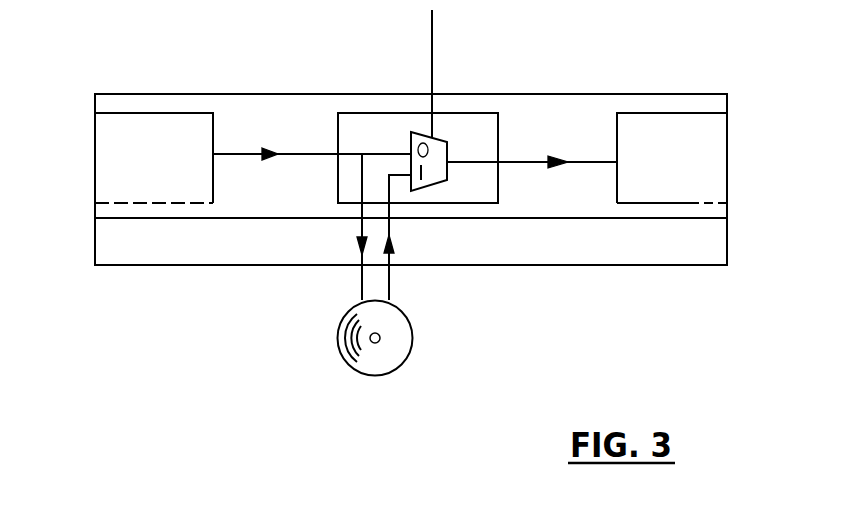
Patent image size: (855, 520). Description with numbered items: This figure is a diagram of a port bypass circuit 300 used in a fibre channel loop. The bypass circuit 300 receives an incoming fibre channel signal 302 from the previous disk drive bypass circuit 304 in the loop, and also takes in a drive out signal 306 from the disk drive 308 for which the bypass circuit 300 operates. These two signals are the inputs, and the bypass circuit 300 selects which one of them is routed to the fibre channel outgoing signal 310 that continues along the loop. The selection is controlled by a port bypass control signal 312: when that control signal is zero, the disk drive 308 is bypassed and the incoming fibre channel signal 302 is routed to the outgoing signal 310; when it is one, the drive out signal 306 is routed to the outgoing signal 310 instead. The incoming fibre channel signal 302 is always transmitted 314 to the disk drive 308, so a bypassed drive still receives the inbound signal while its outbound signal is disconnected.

The bypass circuit 300 is at (377, 113).
The incoming fibre channel signal 302 is at (285, 147).
The previous disk drive bypass circuit 304 is at (150, 113).
The drive out signal 306 is at (390, 280).
The disk drive 308 is at (406, 357).
The fibre channel outgoing signal 310 is at (583, 161).
The port bypass control signal 312 is at (432, 33).
The transmission of incoming signal to disk drive 314 is at (360, 281).